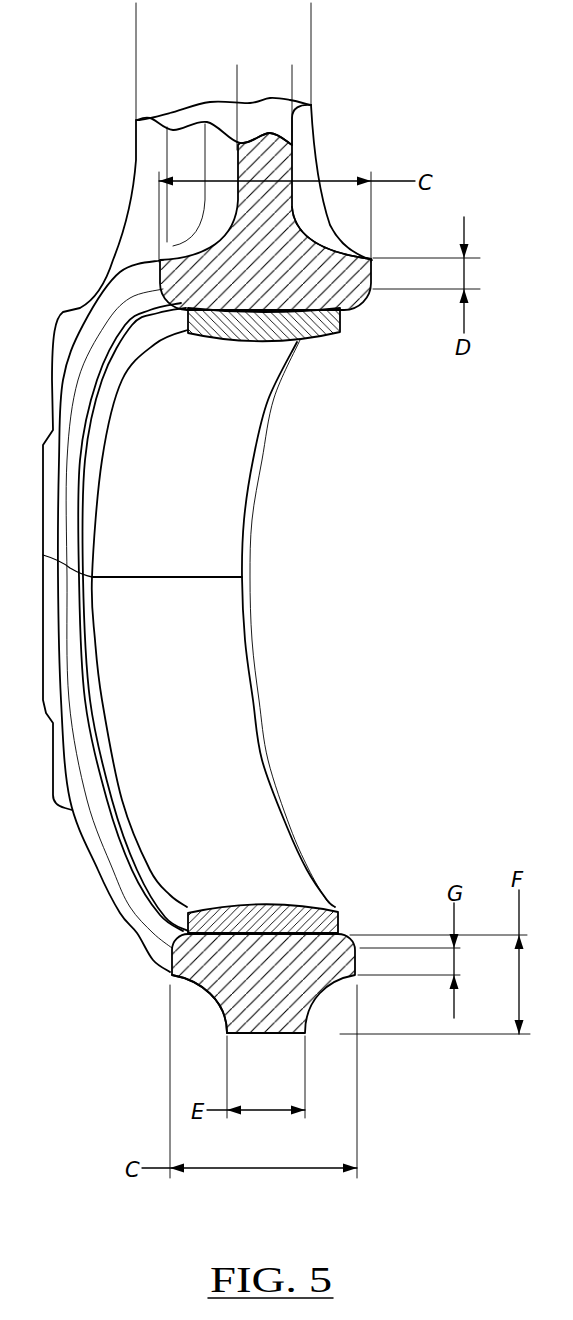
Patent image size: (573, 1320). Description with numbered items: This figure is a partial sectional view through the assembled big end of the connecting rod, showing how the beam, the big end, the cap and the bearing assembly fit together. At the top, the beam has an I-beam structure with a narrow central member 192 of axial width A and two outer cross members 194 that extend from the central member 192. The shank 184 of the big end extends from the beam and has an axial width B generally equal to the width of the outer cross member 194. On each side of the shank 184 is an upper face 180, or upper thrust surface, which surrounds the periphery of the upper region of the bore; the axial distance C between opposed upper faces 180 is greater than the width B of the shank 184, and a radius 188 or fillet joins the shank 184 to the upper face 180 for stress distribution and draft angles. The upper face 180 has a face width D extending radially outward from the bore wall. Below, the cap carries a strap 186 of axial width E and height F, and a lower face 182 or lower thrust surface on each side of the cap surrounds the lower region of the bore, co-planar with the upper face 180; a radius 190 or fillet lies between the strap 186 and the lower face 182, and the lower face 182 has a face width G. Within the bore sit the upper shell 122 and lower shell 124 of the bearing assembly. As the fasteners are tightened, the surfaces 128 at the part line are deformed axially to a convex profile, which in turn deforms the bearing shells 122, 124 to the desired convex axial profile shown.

The upper shell 122 is at (210, 448).
The lower shell 124 is at (210, 672).
The part line 128 is at (330, 330).
The upper face 180 is at (372, 279).
The lower face 182 is at (153, 948).
The shank 184 is at (136, 9).
The strap 186 is at (263, 1002).
The radius 188 is at (318, 240).
The radius 190 is at (210, 992).
The central member 192 is at (292, 73).
The outer cross member 194 is at (141, 222).